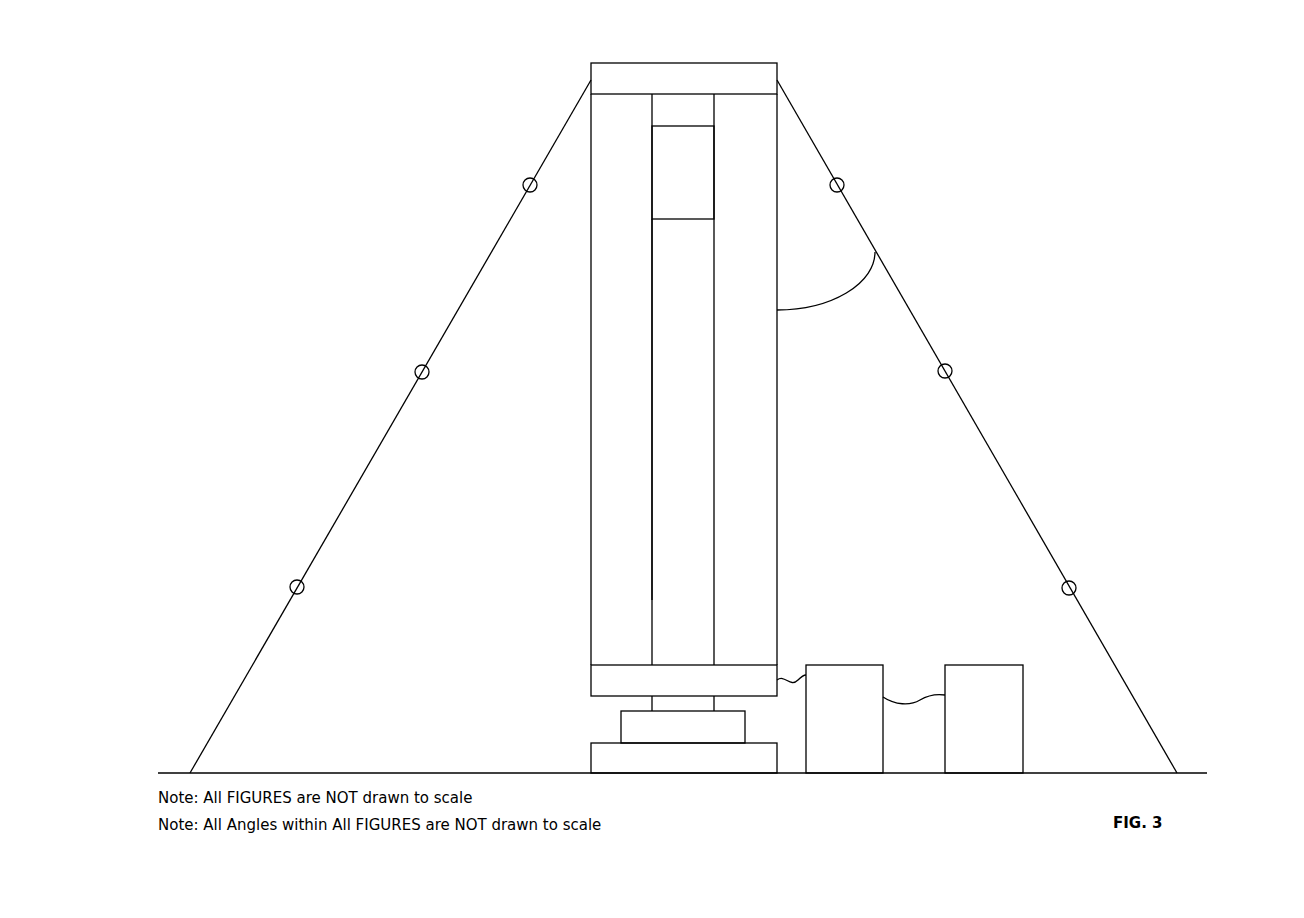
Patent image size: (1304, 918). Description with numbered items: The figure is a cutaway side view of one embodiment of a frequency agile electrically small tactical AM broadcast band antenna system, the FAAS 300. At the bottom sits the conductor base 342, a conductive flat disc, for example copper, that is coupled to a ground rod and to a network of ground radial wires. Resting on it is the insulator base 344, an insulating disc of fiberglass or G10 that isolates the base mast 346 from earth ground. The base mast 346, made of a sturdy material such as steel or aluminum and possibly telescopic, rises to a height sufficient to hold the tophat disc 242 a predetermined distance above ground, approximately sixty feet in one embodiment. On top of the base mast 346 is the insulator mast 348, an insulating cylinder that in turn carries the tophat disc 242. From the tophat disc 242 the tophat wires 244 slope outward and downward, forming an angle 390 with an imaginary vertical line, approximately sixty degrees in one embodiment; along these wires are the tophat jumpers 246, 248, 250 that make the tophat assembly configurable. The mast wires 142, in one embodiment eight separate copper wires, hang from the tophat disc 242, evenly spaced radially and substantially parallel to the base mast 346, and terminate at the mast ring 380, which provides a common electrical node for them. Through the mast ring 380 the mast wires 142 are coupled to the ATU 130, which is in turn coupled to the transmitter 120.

The transmitter 120 is at (965, 676).
The ATU 130 is at (826, 676).
The mast wires 142 is at (591, 462).
The tophat disc 242 is at (686, 70).
The tophat wires 244 is at (221, 708).
The tophat jumper 246 is at (527, 182).
The tophat jumper 248 is at (418, 368).
The tophat jumper 250 is at (292, 584).
The FAAS 300 is at (703, 831).
The conductor base 342 is at (598, 757).
The insulator base 344 is at (640, 724).
The base mast 346 is at (668, 330).
The insulator mast 348 is at (674, 200).
The mast ring 380 is at (613, 680).
The angle 390 is at (840, 300).